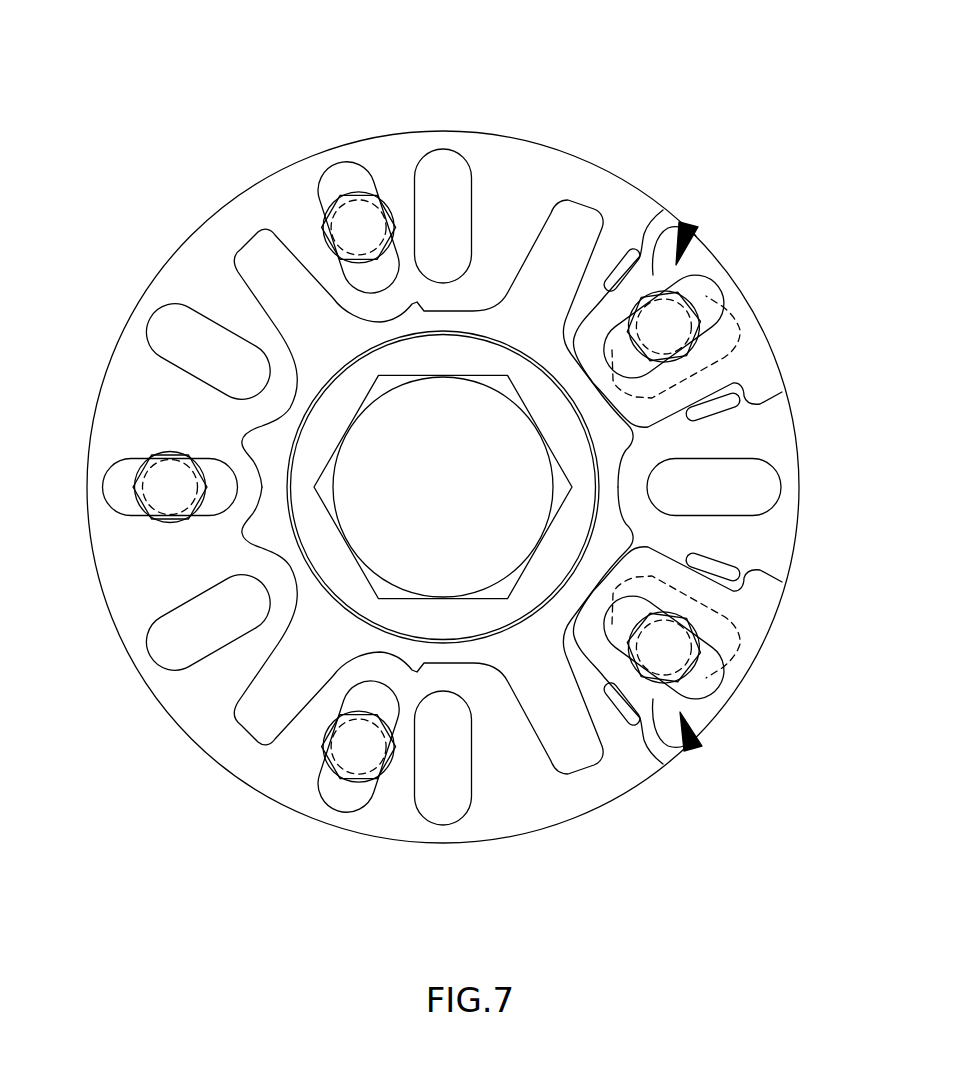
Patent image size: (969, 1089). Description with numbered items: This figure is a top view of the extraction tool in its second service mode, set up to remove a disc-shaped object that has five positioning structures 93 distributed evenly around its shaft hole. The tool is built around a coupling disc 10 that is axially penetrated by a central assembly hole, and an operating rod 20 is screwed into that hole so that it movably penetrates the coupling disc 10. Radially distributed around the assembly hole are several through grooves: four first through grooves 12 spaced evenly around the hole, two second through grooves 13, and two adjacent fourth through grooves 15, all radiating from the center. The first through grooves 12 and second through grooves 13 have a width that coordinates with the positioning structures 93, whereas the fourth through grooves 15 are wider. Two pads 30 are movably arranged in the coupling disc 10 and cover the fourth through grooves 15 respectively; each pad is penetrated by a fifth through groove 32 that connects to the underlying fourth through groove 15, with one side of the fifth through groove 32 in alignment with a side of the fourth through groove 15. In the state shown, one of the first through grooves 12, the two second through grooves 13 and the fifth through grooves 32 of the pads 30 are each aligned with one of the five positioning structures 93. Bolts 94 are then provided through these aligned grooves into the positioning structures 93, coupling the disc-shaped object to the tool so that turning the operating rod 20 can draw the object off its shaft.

The coupling disc 10 is at (190, 232).
The first through grooves 12 is at (118, 505).
The second through grooves 13 is at (345, 188).
The fourth through grooves 15 is at (740, 347).
The operating rod 20 is at (438, 408).
The pads 30 is at (693, 222).
The fifth through groove 32 is at (712, 288).
The positioning structures 93 is at (330, 220).
The bolts 94 is at (387, 208).